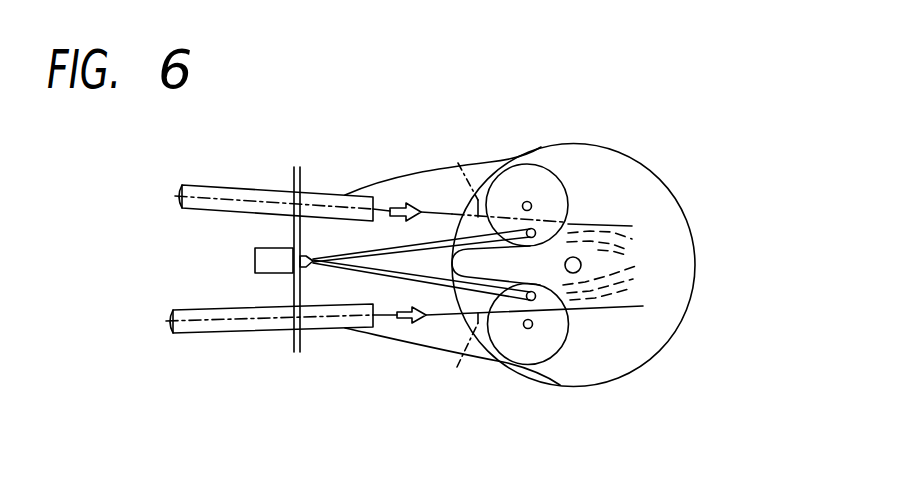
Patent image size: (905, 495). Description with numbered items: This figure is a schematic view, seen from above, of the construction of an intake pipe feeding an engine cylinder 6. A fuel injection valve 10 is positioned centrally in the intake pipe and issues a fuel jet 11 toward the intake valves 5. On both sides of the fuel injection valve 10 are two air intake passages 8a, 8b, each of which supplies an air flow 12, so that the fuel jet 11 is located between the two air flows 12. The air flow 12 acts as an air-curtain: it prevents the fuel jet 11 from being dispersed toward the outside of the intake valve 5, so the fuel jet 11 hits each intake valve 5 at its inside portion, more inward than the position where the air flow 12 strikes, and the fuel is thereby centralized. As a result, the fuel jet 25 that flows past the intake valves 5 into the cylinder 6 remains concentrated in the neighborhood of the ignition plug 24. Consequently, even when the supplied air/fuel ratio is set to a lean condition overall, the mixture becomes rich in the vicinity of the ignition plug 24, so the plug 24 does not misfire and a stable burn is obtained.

The air intake passage 8a is at (208, 185).
The air intake passage 8b is at (192, 309).
The fuel injection valve 10 is at (262, 248).
The fuel jet 11 is at (435, 218).
The air flow 12 is at (458, 163).
The intake valve 5 is at (533, 178).
The cylinder 6 is at (635, 177).
The ignition plug 24 is at (581, 268).
The fuel jet 25 is at (632, 226).